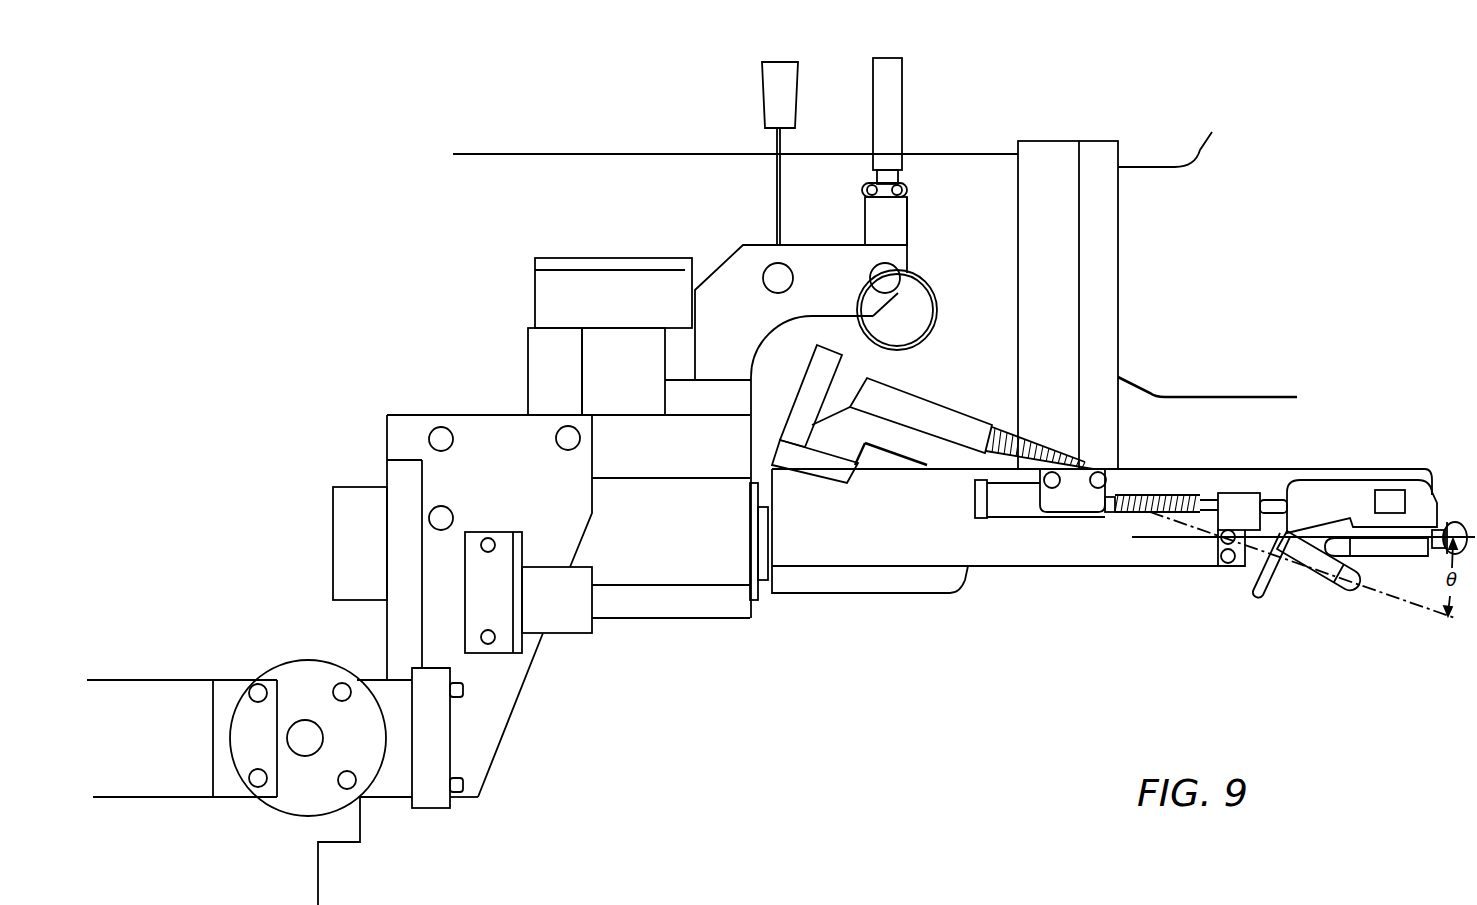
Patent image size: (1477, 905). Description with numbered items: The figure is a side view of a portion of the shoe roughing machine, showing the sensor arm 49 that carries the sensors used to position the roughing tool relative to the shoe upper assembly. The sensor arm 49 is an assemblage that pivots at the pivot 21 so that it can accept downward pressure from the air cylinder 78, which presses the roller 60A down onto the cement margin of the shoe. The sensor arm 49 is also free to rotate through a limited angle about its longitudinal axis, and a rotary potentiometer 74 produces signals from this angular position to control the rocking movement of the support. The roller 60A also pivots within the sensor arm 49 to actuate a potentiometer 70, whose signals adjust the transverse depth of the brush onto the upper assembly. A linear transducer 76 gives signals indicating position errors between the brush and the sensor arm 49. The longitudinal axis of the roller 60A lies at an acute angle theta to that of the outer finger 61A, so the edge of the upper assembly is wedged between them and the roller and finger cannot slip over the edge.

The pivot 21 is at (306, 728).
The sensor arm 49 is at (1274, 471).
The roller 60A is at (1462, 524).
The outer finger 61A is at (1342, 587).
The potentiometer 70 is at (1012, 507).
The rotary potentiometer 74 is at (363, 487).
The linear transducer 76 is at (762, 97).
The air cylinder 78 is at (900, 120).